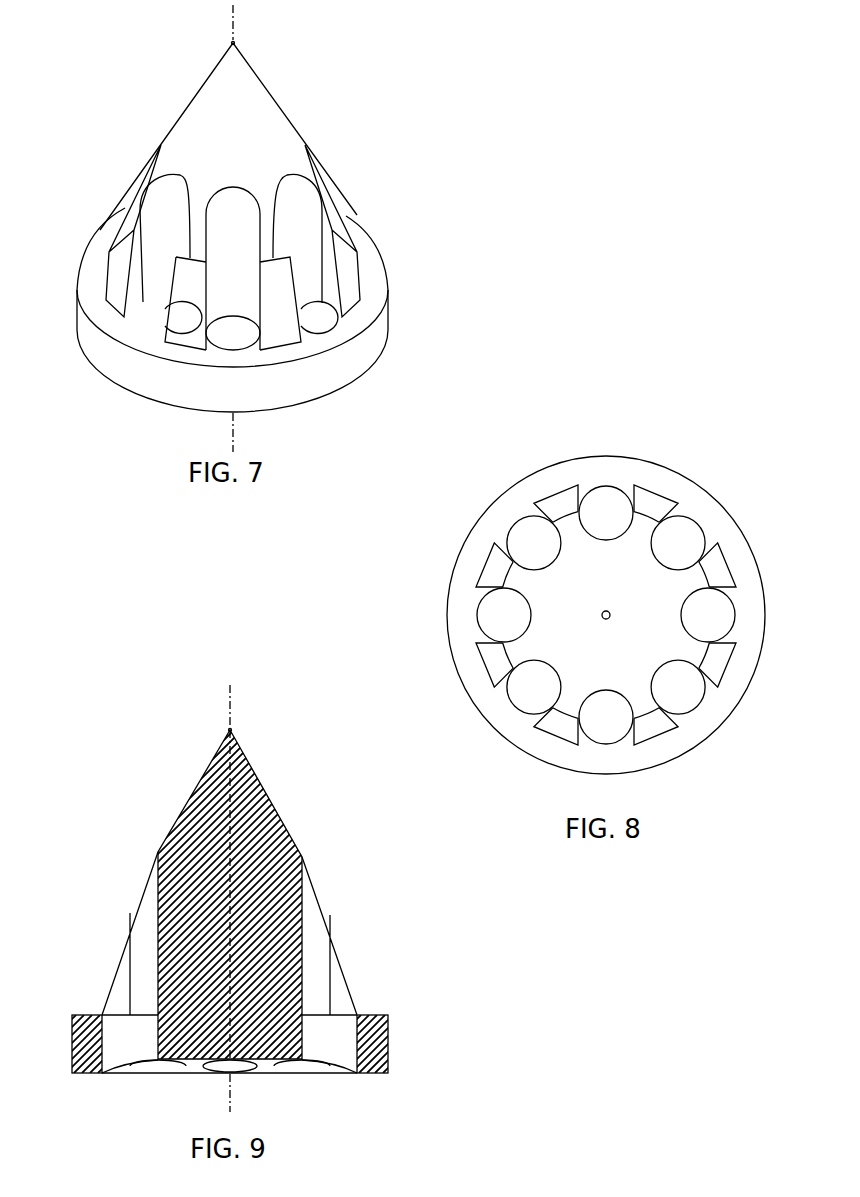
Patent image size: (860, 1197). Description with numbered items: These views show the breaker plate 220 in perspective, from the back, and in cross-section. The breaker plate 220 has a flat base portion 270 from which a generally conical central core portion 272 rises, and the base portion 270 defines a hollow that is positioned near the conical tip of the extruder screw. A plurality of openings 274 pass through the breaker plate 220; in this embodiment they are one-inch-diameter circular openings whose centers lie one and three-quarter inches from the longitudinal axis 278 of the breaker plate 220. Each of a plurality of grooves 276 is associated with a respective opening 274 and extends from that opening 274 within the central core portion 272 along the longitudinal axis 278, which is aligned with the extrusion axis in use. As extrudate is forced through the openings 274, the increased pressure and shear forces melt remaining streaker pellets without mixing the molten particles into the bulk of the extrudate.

In FIG. 7, the breaker plate 220 is at (76, 90).
In FIG. 8, the breaker plate 220 is at (757, 447).
In FIG. 9, the breaker plate 220 is at (95, 758).
In FIG. 7, the base portion 270 is at (388, 320).
In FIG. 8, the base portion 270 is at (446, 606).
In FIG. 9, the base portion 270 is at (388, 1036).
In FIG. 7, the central core portion 272 is at (286, 112).
In FIG. 8, the central core portion 272 is at (543, 593).
In FIG. 9, the central core portion 272 is at (256, 760).
In FIG. 7, the openings 274 is at (330, 318).
In FIG. 8, the openings 274 is at (706, 517).
In FIG. 9, the openings 274 is at (107, 1030).
In FIG. 7, the grooves 276 is at (318, 173).
In FIG. 9, the grooves 276 is at (152, 888).
In FIG. 7, the longitudinal axis 278 is at (233, 43).
In FIG. 9, the longitudinal axis 278 is at (230, 703).